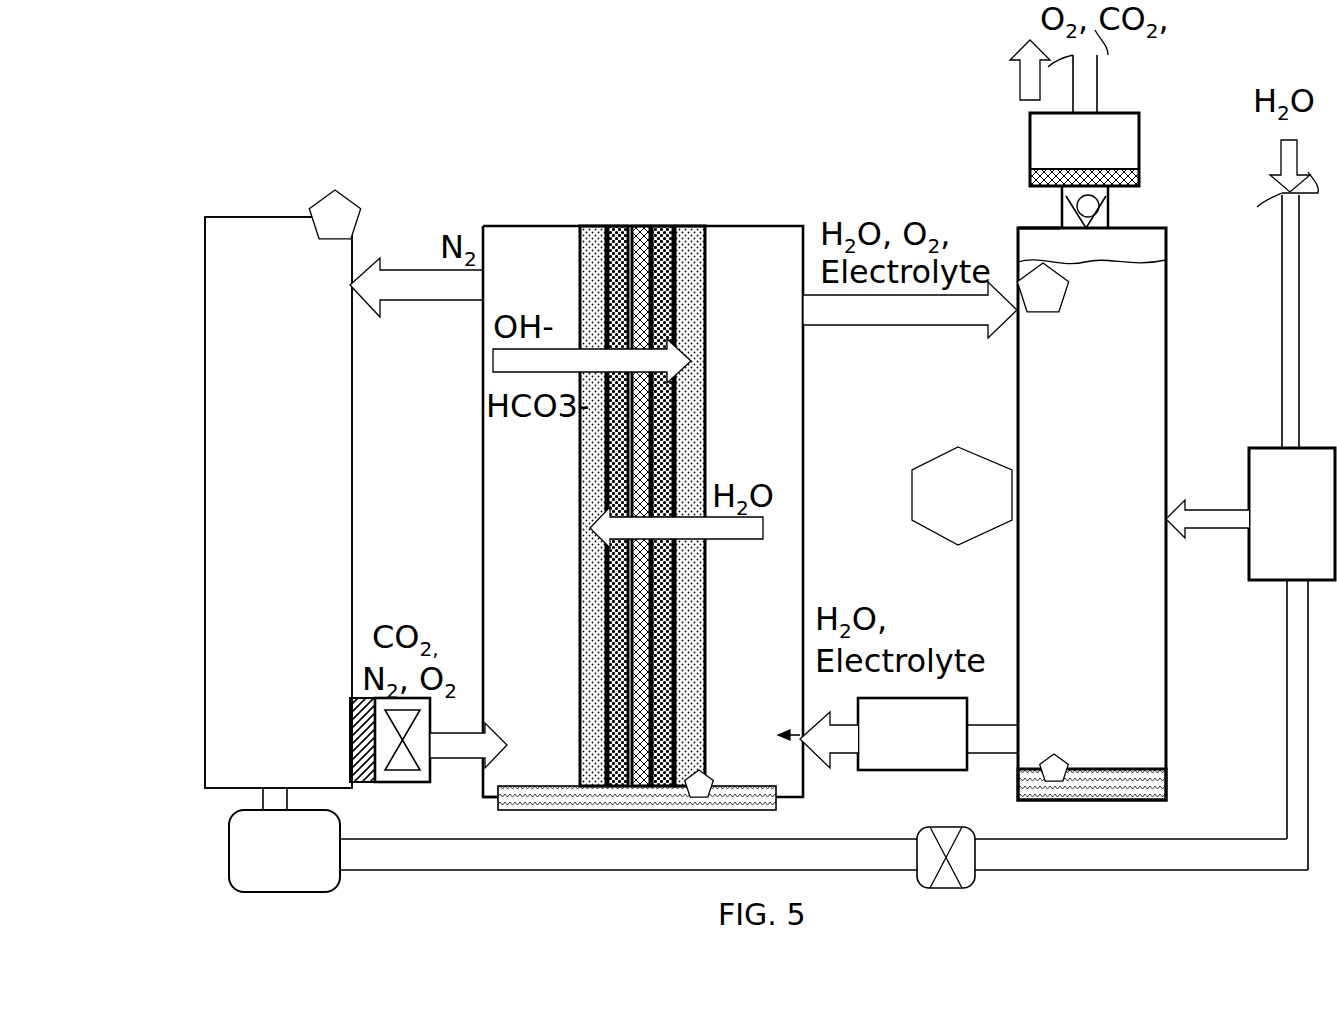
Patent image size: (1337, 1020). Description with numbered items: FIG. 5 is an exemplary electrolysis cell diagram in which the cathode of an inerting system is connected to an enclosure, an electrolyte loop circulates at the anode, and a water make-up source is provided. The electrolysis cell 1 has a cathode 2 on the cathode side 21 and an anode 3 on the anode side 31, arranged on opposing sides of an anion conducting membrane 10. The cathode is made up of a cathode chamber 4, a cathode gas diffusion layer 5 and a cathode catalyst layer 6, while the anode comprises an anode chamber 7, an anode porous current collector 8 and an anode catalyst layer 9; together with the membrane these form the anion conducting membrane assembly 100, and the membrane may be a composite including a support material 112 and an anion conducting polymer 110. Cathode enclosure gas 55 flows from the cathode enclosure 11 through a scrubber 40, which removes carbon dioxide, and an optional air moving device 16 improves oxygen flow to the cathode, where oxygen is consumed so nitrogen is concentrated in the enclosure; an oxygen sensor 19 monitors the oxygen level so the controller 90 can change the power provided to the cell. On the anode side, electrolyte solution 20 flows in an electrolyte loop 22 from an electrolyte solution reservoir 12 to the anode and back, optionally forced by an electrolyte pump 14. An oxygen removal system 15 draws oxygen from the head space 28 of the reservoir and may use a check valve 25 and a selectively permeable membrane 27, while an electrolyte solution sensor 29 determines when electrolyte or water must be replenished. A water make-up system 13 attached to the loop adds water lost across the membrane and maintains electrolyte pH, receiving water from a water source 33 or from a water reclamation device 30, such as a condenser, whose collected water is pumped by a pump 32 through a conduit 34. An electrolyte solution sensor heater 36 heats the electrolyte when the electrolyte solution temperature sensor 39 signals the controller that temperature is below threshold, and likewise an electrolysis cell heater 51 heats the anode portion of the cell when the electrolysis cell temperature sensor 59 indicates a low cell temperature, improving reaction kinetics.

The electrolysis cell 1 is at (505, 220).
The cathode 2 is at (568, 245).
The anode 3 is at (715, 252).
The cathode chamber 4 is at (548, 255).
The cathode gas diffusion layer 5 is at (598, 250).
The cathode catalyst layer 6 is at (608, 240).
The anode chamber 7 is at (760, 260).
The anode porous current collector 8 is at (706, 232).
The anode catalyst layer 9 is at (678, 240).
The anion conducting membrane 10 is at (645, 243).
The cathode enclosure 11 is at (267, 243).
The electrolyte solution reservoir 12 is at (1150, 320).
The water make-up system 13 is at (1258, 445).
The electrolyte pump 14 is at (908, 750).
The oxygen removal system 15 is at (1035, 135).
The air moving device 16 is at (432, 700).
The oxygen sensor 19 is at (328, 228).
The electrolyte solution 20 is at (993, 700).
The cathode side 21 is at (525, 440).
The electrolyte loop 22 is at (867, 305).
The check valve 25 is at (1100, 215).
The selectively permeable membrane 27 is at (1130, 175).
The head space 28 is at (1035, 243).
The electrolyte solution sensor 29 is at (1043, 300).
The water reclamation device 30 is at (265, 842).
The anode side 31 is at (752, 437).
The pump 32 is at (945, 832).
The water source 33 is at (1265, 200).
The conduit 34 is at (1225, 855).
The electrolyte solution sensor heater 36 is at (1120, 790).
The electrolyte solution temperature sensor 39 is at (1058, 760).
The scrubber 40 is at (352, 725).
The electrolysis cell heater 51 is at (780, 805).
The cathode enclosure gas 55 is at (226, 243).
The electrolysis cell temperature sensor 59 is at (700, 770).
The controller 90 is at (935, 455).
The anion conducting membrane assembly 100 is at (612, 565).
The anion conducting polymer 110 is at (620, 603).
The support material 112 is at (625, 658).